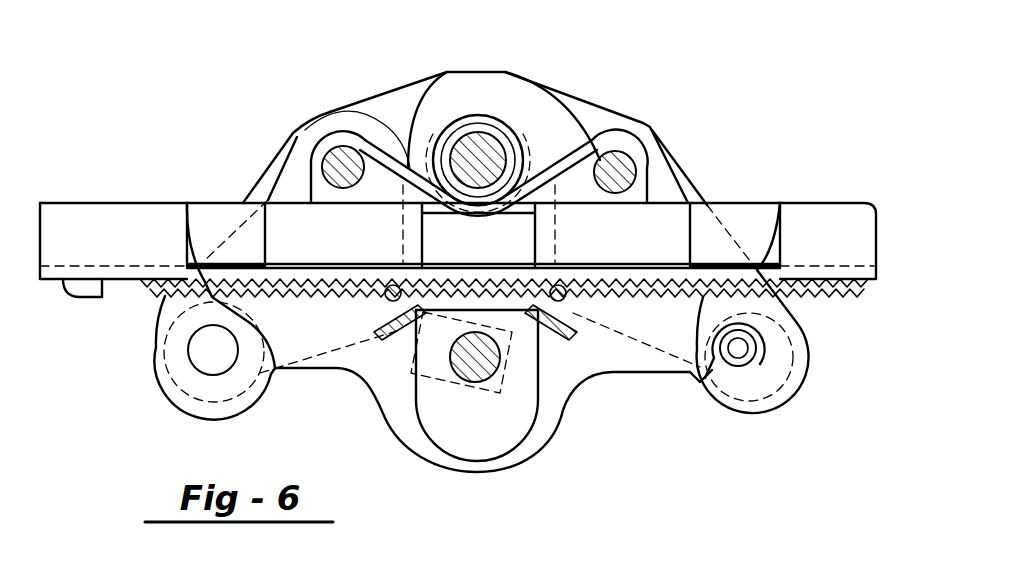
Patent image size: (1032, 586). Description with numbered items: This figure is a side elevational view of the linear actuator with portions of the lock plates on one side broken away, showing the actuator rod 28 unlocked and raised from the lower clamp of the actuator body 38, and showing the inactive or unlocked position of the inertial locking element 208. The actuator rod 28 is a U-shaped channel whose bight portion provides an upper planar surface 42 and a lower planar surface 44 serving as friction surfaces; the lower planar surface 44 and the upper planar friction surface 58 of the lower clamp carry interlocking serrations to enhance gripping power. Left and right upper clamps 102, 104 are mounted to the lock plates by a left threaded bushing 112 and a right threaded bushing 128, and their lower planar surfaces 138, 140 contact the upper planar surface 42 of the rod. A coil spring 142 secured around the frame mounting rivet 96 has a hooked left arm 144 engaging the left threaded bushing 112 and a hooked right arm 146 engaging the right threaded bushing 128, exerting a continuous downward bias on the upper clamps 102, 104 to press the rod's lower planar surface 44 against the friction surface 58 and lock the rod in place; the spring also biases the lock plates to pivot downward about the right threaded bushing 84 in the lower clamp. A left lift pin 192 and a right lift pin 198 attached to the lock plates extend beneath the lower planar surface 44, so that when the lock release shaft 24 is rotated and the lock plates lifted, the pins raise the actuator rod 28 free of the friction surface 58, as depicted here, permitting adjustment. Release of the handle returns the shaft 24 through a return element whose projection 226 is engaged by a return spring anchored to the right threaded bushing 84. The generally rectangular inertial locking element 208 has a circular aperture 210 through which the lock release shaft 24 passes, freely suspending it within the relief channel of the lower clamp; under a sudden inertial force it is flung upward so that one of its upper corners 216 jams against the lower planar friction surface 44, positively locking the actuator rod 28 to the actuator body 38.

The lock release shaft 24 is at (510, 382).
The actuator rod 28 is at (806, 200).
The actuator body 38 is at (541, 58).
The upper planar surface 42 is at (452, 262).
The lower planar surface 44 is at (170, 292).
The upper planar friction surface 58 is at (265, 207).
The right threaded bushing 84 is at (782, 376).
The frame mounting rivet 96 is at (483, 148).
The left upper clamp 102 is at (290, 130).
The right upper clamp 104 is at (655, 126).
The left threaded bushing 112 is at (326, 183).
The right threaded bushing 128 is at (624, 192).
The lower planar surface 138 is at (308, 296).
The lower planar surface 140 is at (612, 275).
The coil spring 142 is at (460, 110).
The left arm 144 is at (380, 140).
The right arm 146 is at (578, 157).
The left lift pin 192 is at (388, 284).
The right lift pin 198 is at (559, 284).
The inertial locking element 208 is at (497, 445).
The circular aperture 210 is at (472, 382).
The upper corners 216 is at (382, 322).
The projection 226 is at (768, 328).